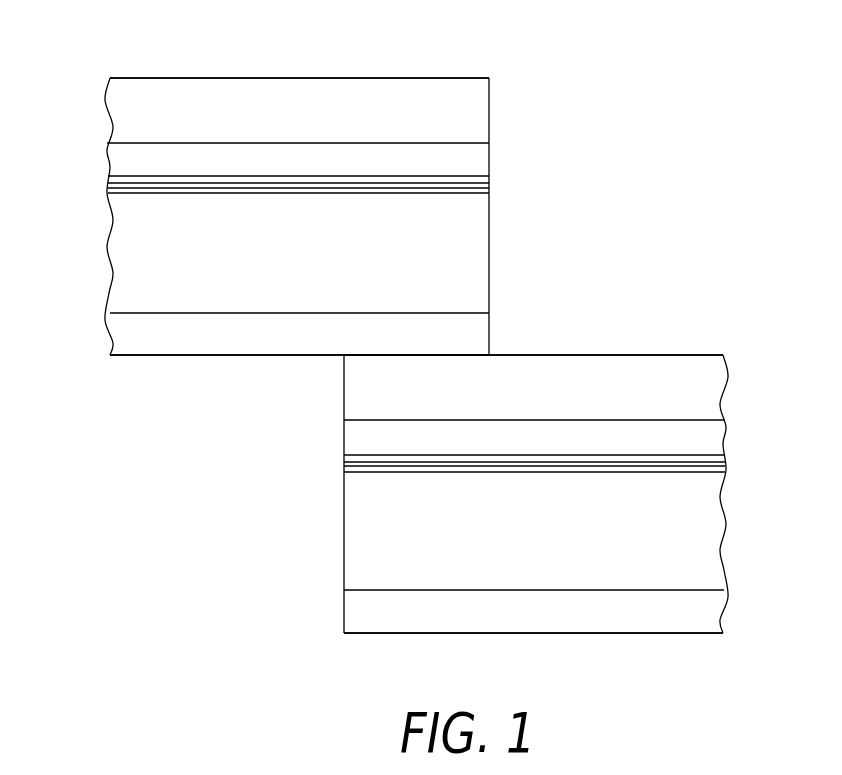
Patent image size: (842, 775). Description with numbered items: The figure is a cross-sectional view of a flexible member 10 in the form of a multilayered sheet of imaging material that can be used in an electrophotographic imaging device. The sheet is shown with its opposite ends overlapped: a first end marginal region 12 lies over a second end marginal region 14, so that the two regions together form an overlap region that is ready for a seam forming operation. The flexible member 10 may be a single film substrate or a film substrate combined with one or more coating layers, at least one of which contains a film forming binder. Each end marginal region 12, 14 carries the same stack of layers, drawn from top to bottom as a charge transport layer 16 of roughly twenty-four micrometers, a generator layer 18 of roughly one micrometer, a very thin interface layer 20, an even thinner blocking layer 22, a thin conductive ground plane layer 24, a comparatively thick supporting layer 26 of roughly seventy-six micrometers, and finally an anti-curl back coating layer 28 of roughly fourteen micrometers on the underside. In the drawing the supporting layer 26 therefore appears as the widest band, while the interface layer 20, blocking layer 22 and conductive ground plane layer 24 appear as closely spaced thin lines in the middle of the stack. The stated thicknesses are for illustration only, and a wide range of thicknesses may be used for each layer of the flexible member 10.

The flexible member 10 is at (586, 120).
The first end marginal region 12 is at (408, 58).
The second end marginal region 14 is at (504, 652).
The charge transport layer 16 is at (118, 103).
The generator layer 18 is at (118, 149).
The interface layer 20 is at (112, 178).
The blocking layer 22 is at (112, 185).
The conductive ground plane layer 24 is at (114, 192).
The supporting layer 26 is at (118, 253).
The anti-curl back coating layer 28 is at (118, 327).